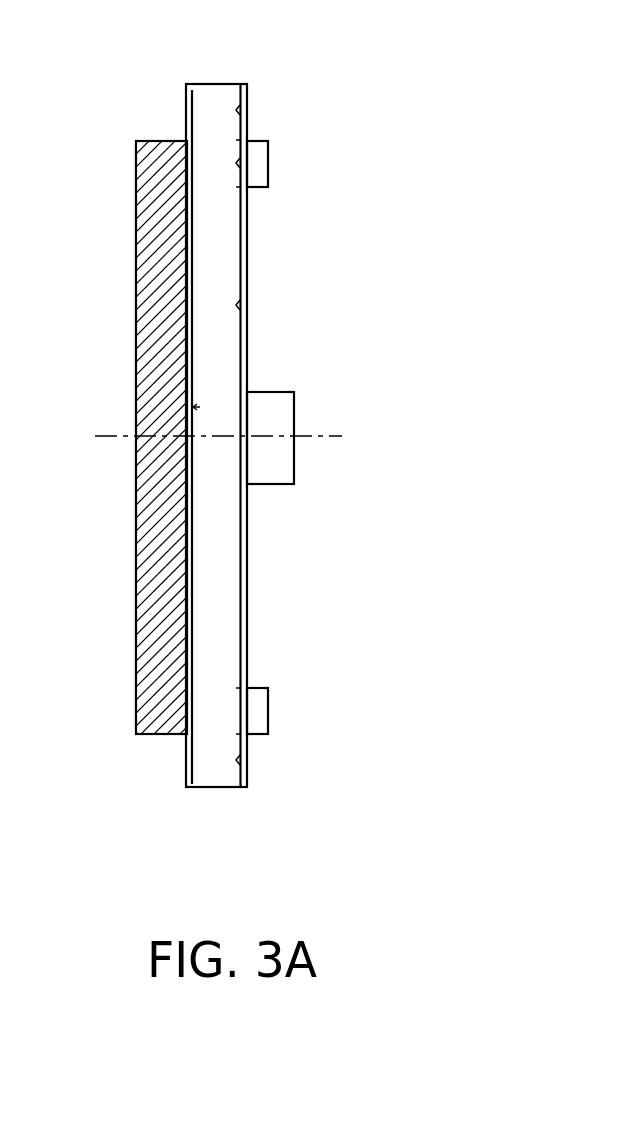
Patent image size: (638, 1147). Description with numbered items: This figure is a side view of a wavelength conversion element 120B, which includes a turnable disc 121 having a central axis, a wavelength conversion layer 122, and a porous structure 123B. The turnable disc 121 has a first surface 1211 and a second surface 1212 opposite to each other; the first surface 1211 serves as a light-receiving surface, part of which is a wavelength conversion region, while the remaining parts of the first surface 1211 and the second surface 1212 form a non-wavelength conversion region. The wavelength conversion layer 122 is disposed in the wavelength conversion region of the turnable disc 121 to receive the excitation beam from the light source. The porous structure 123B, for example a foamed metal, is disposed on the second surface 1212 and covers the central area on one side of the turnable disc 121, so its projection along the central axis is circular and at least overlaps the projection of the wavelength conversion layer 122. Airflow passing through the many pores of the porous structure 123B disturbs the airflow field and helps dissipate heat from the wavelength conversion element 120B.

The wavelength conversion element 120B is at (468, 882).
The turnable disc 121 is at (215, 782).
The first surface 1211 is at (258, 103).
The second surface 1212 is at (175, 103).
The wavelength conversion layer 122 is at (262, 163).
The porous structure 123B is at (153, 292).